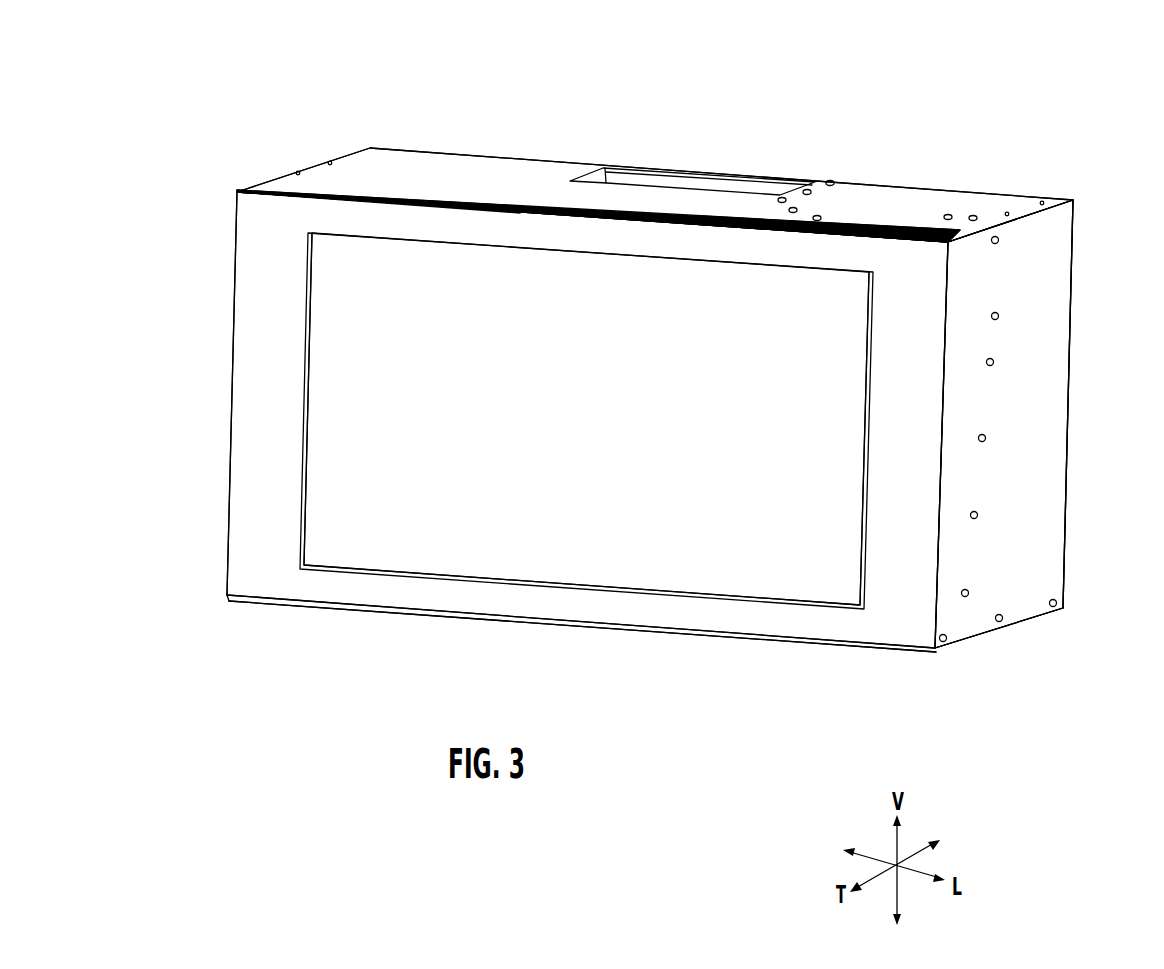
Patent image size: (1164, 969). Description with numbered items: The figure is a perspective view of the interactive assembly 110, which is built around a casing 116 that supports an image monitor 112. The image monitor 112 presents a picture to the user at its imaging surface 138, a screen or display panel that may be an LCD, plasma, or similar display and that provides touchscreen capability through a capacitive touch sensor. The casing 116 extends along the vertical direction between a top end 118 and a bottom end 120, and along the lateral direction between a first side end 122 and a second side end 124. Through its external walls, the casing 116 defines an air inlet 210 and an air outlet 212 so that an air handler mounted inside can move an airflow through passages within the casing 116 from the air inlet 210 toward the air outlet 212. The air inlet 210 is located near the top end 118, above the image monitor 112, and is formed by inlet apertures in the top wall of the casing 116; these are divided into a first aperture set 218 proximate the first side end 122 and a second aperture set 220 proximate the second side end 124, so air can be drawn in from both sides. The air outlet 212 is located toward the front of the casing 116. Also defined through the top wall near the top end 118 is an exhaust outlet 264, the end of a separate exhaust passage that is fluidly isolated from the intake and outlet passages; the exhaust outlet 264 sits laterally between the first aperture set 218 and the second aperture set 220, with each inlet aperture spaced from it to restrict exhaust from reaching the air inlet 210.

The interactive assembly 110 is at (889, 66).
The image monitor 112 is at (846, 590).
The casing 116 is at (1048, 383).
The top end 118 is at (989, 198).
The bottom end 120 is at (898, 662).
The first side end 122 is at (1046, 556).
The second side end 124 is at (215, 430).
The imaging surface 138 is at (541, 565).
The air inlet 210 is at (364, 175).
The air outlet 212 is at (210, 605).
The first aperture set 218 is at (909, 212).
The second aperture set 220 is at (364, 175).
The exhaust outlet 264 is at (513, 185).